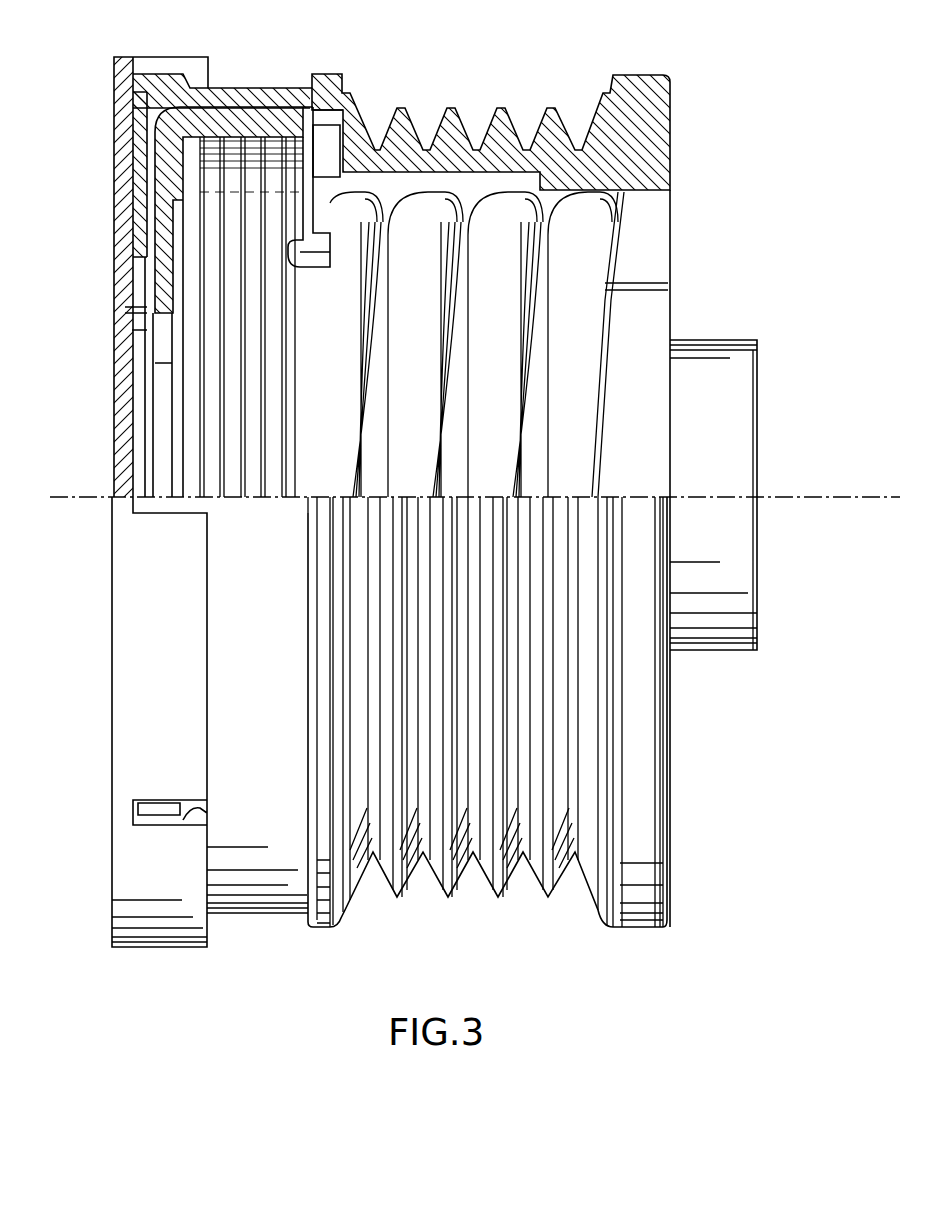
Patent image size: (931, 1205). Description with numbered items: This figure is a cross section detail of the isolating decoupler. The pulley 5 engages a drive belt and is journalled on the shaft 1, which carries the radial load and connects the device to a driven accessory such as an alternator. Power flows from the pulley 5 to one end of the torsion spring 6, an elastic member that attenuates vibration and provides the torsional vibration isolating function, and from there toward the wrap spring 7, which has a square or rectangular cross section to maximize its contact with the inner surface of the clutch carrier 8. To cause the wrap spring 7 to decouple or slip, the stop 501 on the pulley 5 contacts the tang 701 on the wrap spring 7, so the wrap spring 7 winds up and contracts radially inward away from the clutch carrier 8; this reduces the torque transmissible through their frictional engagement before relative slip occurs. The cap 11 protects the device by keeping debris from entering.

The shaft 1 is at (712, 463).
The pulley 5 is at (655, 133).
The stop 501 is at (328, 157).
The torsion spring 6 is at (560, 328).
The wrap spring 7 is at (235, 342).
The tang 701 is at (330, 251).
The clutch carrier 8 is at (163, 182).
The cap 11 is at (167, 874).